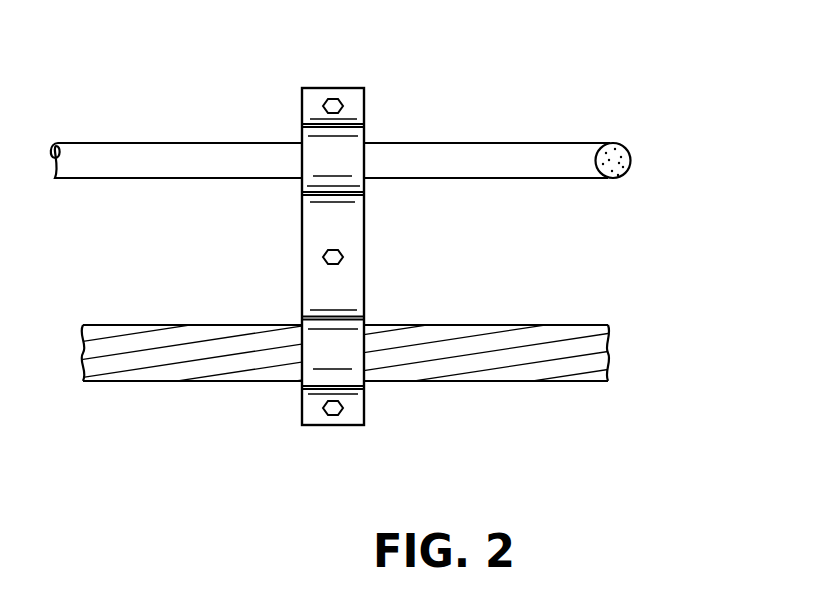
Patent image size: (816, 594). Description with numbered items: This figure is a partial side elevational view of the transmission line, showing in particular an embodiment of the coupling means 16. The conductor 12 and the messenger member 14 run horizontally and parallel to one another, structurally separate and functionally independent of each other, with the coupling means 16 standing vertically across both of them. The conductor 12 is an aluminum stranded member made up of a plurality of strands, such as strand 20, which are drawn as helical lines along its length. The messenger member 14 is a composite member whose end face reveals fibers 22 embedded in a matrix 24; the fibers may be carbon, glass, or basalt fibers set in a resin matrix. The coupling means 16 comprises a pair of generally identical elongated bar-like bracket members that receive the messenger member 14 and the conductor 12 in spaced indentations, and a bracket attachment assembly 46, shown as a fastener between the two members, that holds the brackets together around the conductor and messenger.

The conductor 12 is at (466, 398).
The messenger member 14 is at (472, 143).
The coupling means 16 is at (330, 84).
The strand 20 is at (520, 325).
The fibers 22 is at (612, 158).
The matrix 24 is at (609, 145).
The bracket attachment assembly 46 is at (344, 257).